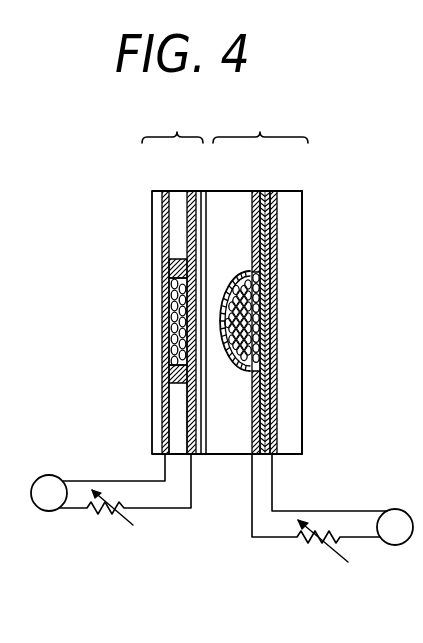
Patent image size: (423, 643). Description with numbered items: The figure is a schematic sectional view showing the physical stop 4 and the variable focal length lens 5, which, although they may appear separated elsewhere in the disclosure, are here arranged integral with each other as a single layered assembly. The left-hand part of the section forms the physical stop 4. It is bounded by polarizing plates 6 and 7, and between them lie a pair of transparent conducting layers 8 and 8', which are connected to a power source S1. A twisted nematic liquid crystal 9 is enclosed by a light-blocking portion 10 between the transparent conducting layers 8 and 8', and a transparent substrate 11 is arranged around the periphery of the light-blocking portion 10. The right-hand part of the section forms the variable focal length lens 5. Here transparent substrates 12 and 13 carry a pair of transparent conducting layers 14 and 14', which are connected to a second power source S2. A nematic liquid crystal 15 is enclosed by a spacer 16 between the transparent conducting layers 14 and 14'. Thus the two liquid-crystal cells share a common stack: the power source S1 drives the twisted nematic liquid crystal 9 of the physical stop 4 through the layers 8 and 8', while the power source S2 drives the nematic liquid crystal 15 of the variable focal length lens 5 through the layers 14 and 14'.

The physical stop 4 is at (172, 125).
The variable focal length lens 5 is at (260, 125).
The polarizing plate 6 is at (157, 207).
The polarizing plate 7 is at (201, 191).
The transparent conducting layer 8 is at (157, 300).
The transparent conducting layer 8' is at (185, 300).
The twisted nematic liquid crystal 9 is at (170, 284).
The light-blocking portion 10 is at (168, 373).
The transparent substrate 11 is at (173, 424).
The transparent substrate 12 is at (220, 456).
The transparent substrate 13 is at (292, 345).
The transparent conducting layer 14 is at (239, 300).
The transparent conducting layer 14' is at (292, 301).
The nematic liquid crystal 15 is at (262, 290).
The spacer 16 is at (264, 191).
The power source S1 is at (45, 512).
The power source S2 is at (403, 545).